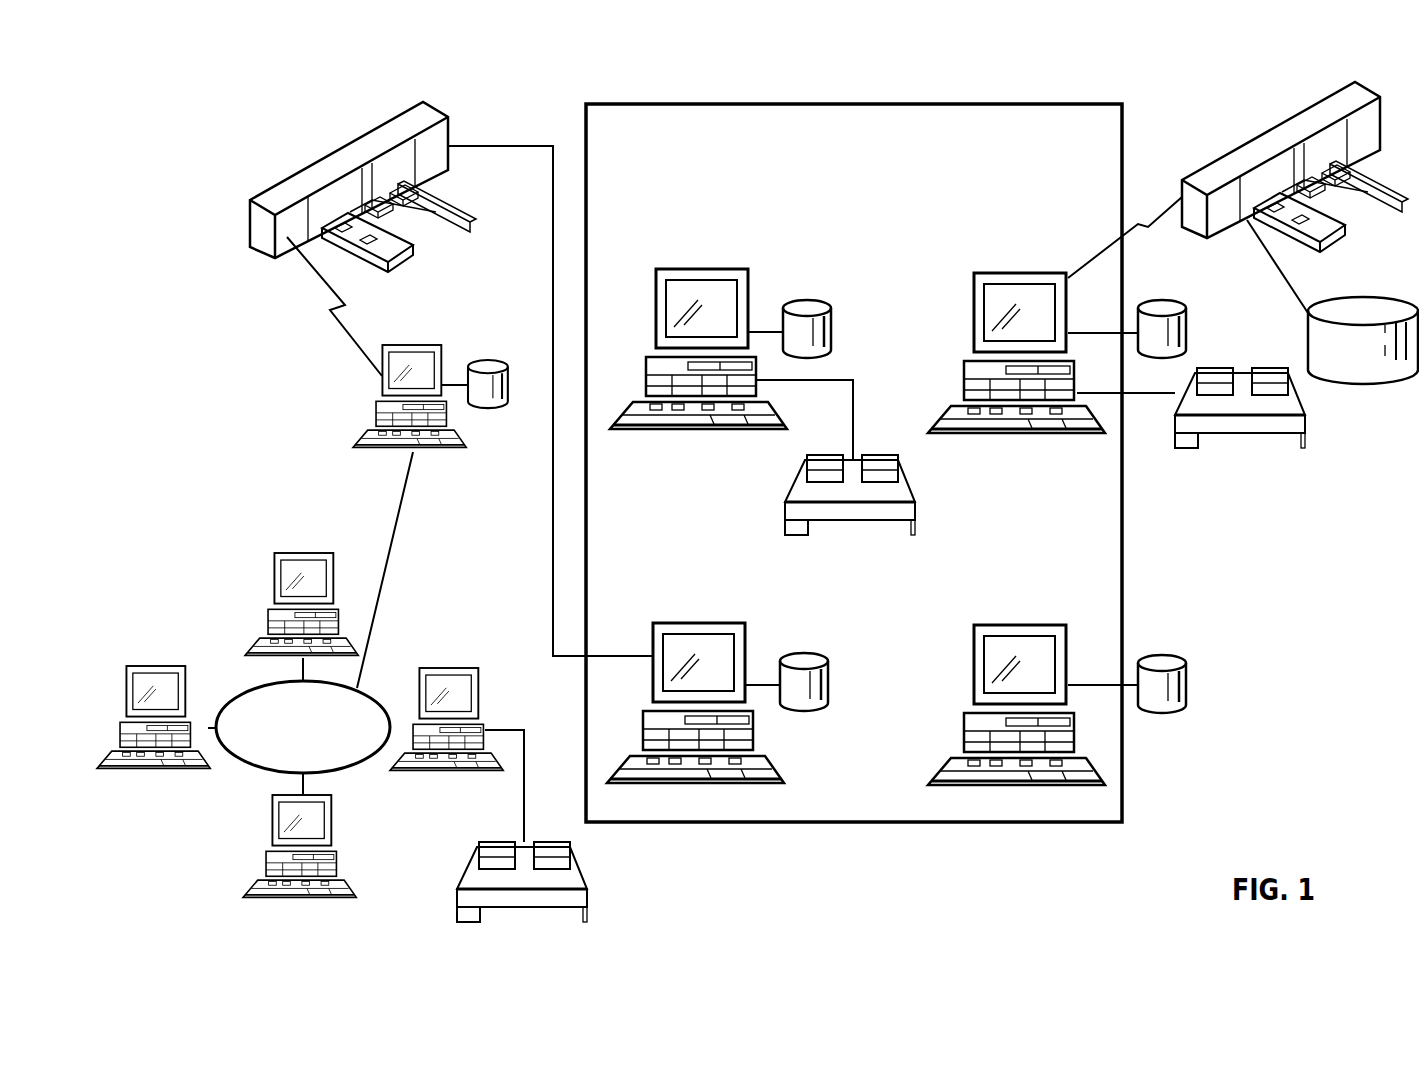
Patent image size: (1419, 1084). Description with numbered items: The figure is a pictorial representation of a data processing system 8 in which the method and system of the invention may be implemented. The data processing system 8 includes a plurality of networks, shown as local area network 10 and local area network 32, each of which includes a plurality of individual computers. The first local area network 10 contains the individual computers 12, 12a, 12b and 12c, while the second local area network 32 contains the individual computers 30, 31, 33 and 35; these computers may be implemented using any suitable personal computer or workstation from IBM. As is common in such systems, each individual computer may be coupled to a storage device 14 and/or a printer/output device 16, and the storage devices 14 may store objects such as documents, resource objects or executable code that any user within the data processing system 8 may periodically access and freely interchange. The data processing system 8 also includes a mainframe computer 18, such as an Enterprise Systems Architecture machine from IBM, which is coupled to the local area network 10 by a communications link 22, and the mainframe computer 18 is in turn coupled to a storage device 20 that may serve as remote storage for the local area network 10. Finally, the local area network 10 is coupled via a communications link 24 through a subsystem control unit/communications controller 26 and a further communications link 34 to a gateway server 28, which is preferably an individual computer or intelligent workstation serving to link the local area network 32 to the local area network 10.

The data processing system 8 is at (570, 108).
The local area network 10 is at (733, 181).
The individual computer 12 is at (993, 273).
The individual computer 12a is at (676, 268).
The individual computer 12b is at (672, 623).
The individual computer 12c is at (992, 625).
The storage device 14 is at (831, 332).
The printer/output device 16 is at (900, 490).
The mainframe computer 18 is at (1247, 150).
The storage device 20 is at (1363, 353).
The communications link 22 is at (1157, 207).
The communications link 24 is at (553, 292).
The subsystem control unit/communications controller 26 is at (323, 162).
The gateway server 28 is at (425, 345).
The individual computer 30 is at (452, 668).
The individual computer 31 is at (332, 814).
The local area network 32 is at (255, 770).
The individual computer 33 is at (147, 666).
The communications link 34 is at (350, 340).
The individual computer 35 is at (270, 582).